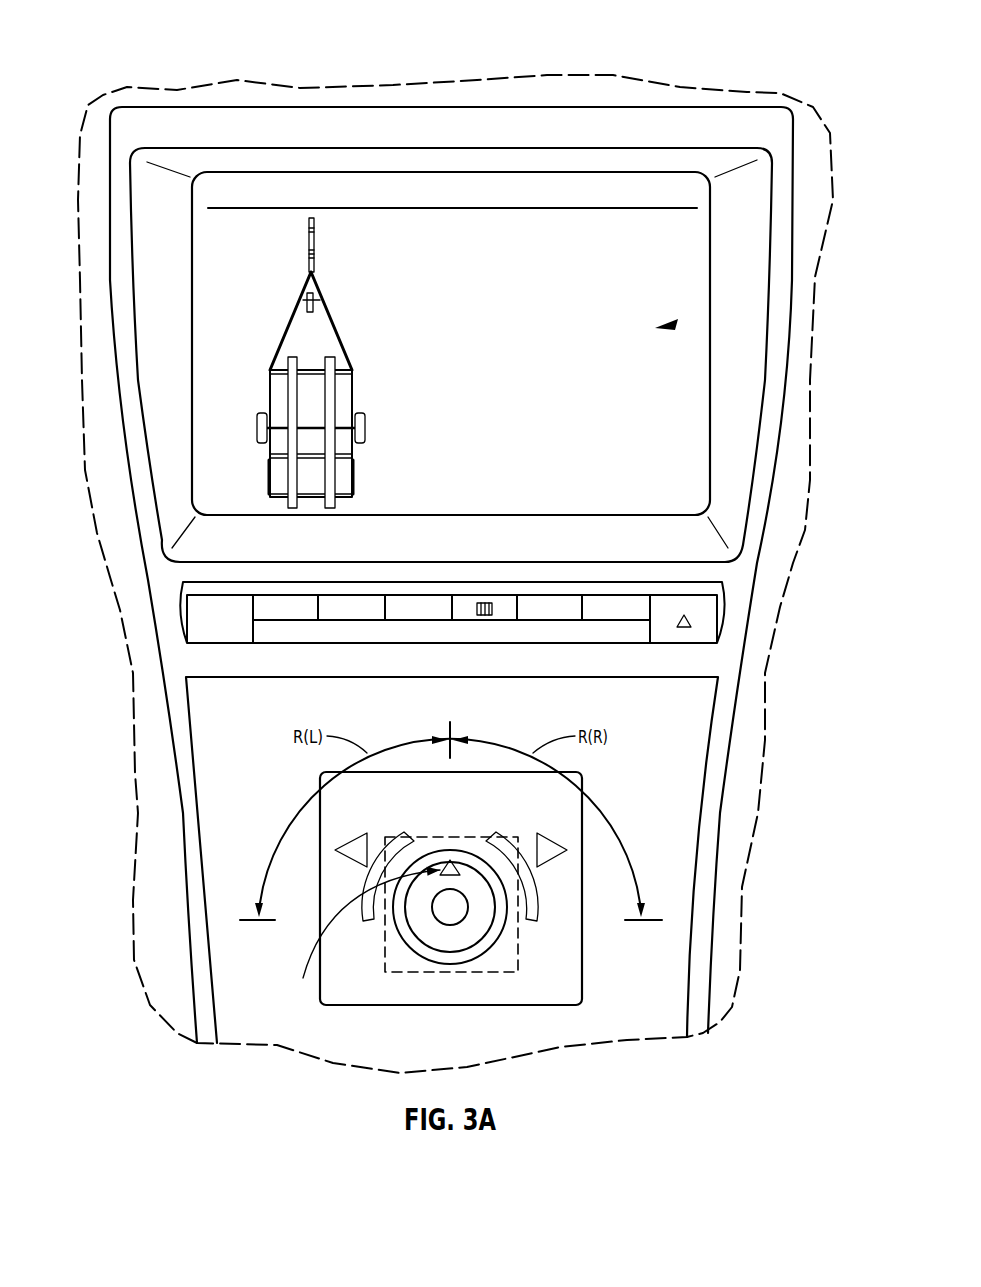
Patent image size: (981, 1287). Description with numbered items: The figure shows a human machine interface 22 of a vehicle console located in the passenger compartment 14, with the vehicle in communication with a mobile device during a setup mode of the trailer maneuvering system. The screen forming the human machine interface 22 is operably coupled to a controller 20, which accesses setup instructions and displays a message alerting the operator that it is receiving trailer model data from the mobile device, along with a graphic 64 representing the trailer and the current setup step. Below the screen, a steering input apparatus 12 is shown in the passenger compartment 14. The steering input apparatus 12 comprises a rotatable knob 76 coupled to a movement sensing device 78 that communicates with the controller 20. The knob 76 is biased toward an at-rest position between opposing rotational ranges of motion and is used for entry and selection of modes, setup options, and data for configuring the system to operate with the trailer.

The steering input apparatus 12 is at (588, 977).
The passenger compartment 14 is at (142, 55).
The controller 20 is at (757, 53).
The human machine interface 22 is at (783, 158).
The graphic 64 is at (272, 370).
The knob 76 is at (433, 935).
The movement sensing device 78 is at (487, 973).